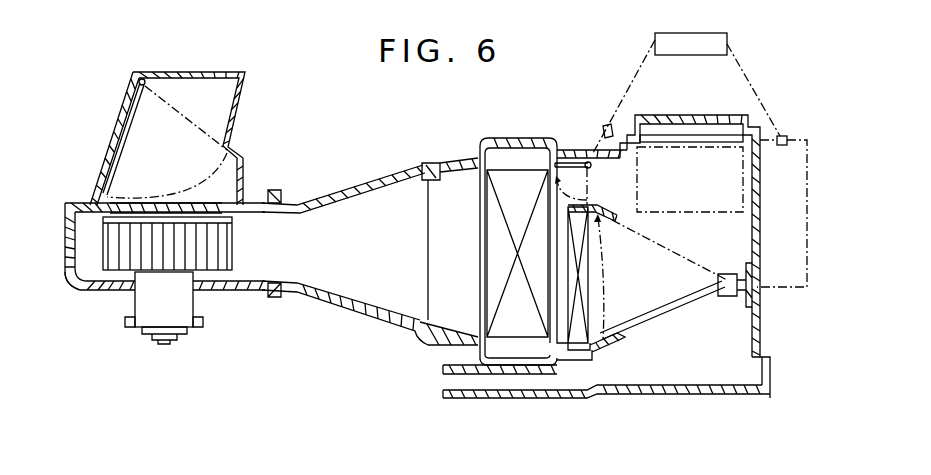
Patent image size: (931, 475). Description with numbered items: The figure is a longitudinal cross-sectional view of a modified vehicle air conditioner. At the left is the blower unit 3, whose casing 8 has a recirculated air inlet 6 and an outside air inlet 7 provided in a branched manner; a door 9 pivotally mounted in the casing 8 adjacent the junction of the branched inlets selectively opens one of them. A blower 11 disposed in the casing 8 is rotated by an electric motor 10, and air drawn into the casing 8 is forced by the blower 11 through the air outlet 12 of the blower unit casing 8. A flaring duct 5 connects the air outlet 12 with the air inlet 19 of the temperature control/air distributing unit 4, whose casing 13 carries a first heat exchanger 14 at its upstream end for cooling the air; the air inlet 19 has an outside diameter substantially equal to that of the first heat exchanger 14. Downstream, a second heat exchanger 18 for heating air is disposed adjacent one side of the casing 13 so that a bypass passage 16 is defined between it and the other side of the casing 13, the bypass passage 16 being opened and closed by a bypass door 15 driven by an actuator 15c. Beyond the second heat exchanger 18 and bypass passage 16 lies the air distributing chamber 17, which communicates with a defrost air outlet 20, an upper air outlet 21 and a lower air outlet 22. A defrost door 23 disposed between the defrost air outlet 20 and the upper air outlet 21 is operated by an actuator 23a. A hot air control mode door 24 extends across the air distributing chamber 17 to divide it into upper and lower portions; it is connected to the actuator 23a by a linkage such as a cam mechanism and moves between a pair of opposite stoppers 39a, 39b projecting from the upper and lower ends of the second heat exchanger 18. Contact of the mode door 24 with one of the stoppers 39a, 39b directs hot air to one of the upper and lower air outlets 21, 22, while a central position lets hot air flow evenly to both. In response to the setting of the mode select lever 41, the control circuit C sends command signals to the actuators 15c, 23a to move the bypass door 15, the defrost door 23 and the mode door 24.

The blower unit 3 is at (80, 198).
The temperature control/air distributing unit 4 is at (498, 136).
The light duct 5 is at (342, 212).
The recirculated air inlet 6 is at (117, 130).
The outside air inlet 7 is at (195, 72).
The casing 8 is at (65, 258).
The door 9 is at (127, 100).
The electric motor 10 is at (186, 318).
The blower 11 is at (122, 260).
The air outlet 12 is at (257, 268).
The casing 13 is at (473, 357).
The first heat exchanger 14 is at (520, 337).
The bypass door 15 is at (562, 150).
The actuator 15c is at (606, 124).
The bypass passage 16 is at (575, 180).
The air distributing chamber 17 is at (735, 242).
The second heat exchanger 18 is at (578, 343).
The air inlet 19 is at (453, 193).
The defrost air outlet 20 is at (730, 133).
The upper air outlet 21 is at (752, 160).
The lower air outlet 22 is at (457, 380).
The defrost door 23 is at (660, 135).
The actuator 23a is at (782, 135).
The hot air control mode door 24 is at (690, 308).
The stopper 39a is at (613, 216).
The stopper 39b is at (617, 337).
The mode select lever 41 is at (730, 42).
The control circuit C is at (682, 33).